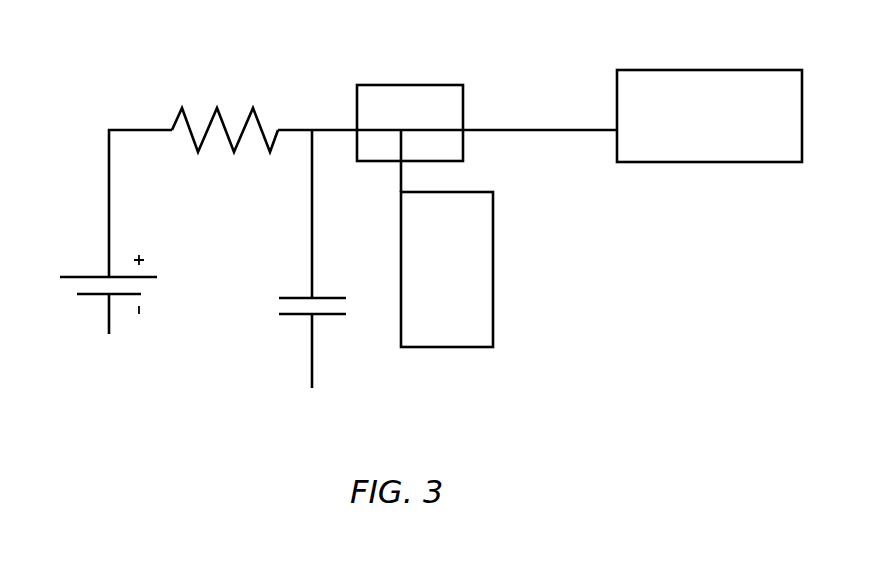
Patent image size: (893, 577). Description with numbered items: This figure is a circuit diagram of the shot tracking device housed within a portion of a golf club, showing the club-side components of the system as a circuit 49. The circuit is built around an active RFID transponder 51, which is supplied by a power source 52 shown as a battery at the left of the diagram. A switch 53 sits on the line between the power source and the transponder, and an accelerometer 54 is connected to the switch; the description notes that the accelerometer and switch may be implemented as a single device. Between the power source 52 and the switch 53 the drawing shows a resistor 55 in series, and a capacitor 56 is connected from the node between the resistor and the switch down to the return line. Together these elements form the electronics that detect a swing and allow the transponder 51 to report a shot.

The circuit 49 is at (165, 48).
The active RFID transponder 51 is at (710, 70).
The power source 52 is at (82, 277).
The switch 53 is at (410, 85).
The accelerometer 54 is at (493, 250).
The resistor 55 is at (246, 120).
The capacitor 56 is at (297, 315).